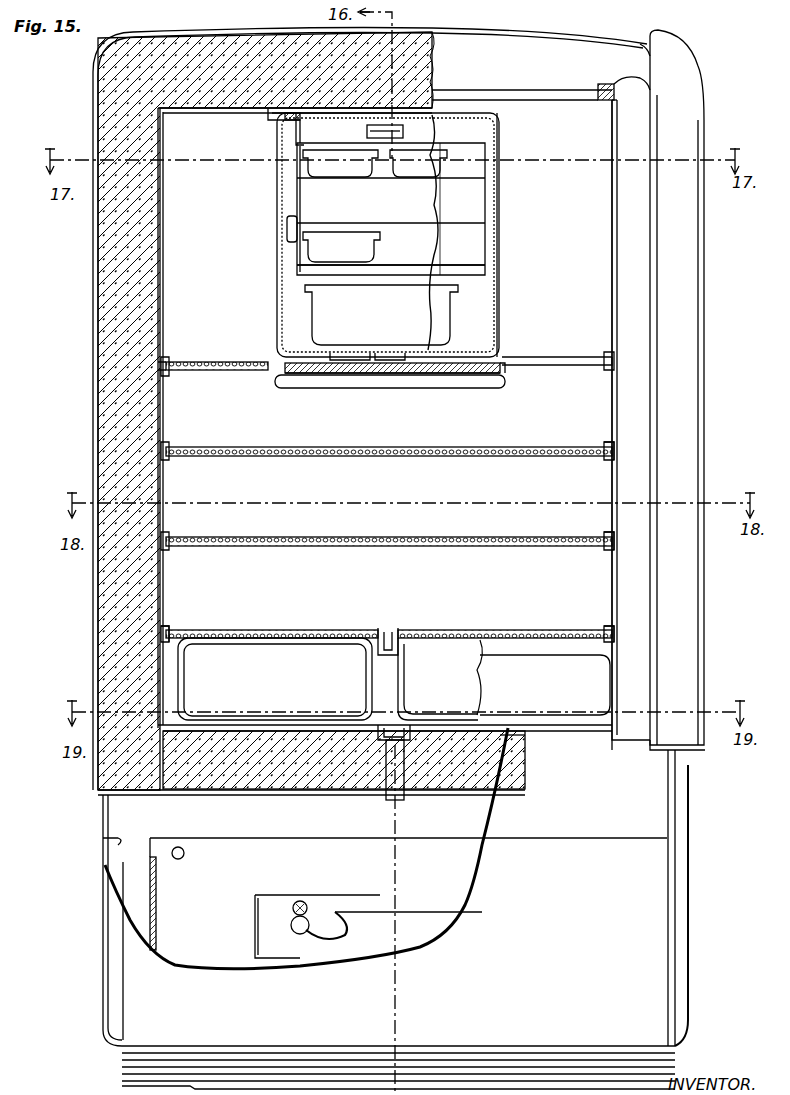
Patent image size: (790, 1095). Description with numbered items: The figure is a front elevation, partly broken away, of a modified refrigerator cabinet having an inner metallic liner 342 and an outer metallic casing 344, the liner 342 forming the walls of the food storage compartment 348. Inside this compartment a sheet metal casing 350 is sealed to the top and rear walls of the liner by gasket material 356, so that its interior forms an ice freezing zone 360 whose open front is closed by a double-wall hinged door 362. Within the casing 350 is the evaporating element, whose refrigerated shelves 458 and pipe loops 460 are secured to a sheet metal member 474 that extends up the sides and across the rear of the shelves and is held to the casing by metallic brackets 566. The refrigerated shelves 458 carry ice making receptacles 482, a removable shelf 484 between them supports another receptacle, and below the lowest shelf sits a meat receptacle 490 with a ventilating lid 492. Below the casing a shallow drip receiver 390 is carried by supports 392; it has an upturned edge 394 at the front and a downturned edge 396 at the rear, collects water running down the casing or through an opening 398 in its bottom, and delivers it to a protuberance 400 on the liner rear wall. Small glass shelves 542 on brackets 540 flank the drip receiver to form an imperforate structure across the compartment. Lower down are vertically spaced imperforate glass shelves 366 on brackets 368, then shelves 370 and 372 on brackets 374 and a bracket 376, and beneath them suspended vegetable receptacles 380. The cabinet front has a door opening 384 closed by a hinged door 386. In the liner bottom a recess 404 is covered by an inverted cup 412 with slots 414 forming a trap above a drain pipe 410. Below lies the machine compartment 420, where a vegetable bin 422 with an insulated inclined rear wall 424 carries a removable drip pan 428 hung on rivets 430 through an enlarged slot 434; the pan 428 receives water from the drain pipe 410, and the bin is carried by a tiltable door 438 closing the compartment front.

The inner metallic liner 342 is at (165, 480).
The outer metallic casing 344 is at (97, 450).
The food storage compartment 348 is at (590, 395).
The sheet metal casing 350 is at (300, 300).
The gasket material 356 is at (265, 121).
The ice freezing zone 360 is at (432, 236).
The hinged door 362 is at (482, 258).
The imperforate shelves 366 is at (507, 456).
The brackets 368 is at (608, 457).
The shelf 370 is at (292, 628).
The shelf 372 is at (503, 628).
The brackets 374 is at (178, 632).
The bracket 376 is at (392, 628).
The receptacles 380 is at (178, 683).
The door opening 384 is at (640, 84).
The hinged door 386 is at (684, 224).
The drip receiver 390 is at (642, 40).
The supports 392 is at (308, 372).
The upturned edge 394 is at (442, 376).
The downturned edge 396 is at (450, 388).
The opening 398 is at (380, 372).
The protuberance 400 is at (488, 382).
The recess 404 is at (345, 786).
The drain pipe 410 is at (388, 792).
The inverted cup 412 is at (393, 726).
The slots 414 is at (432, 770).
The machine compartment 420 is at (110, 840).
The vegetable bin 422 is at (150, 890).
The inclined rear wall 424 is at (178, 914).
The removable drip pan 428 is at (410, 928).
The rivets 430 is at (299, 900).
The enlarged slot 434 is at (312, 925).
The tiltable door 438 is at (140, 988).
The refrigerated shelves 458 is at (440, 184).
The pipe loops 460 is at (287, 230).
The sheet metal member 474 is at (296, 202).
The ice making receptacles 482 is at (320, 255).
The removable shelf 484 is at (455, 216).
The receptacle 490 is at (330, 320).
The lid 492 is at (300, 285).
The brackets 540 is at (170, 374).
The imperforate shelves 542 is at (226, 371).
The metallic brackets 566 is at (287, 127).